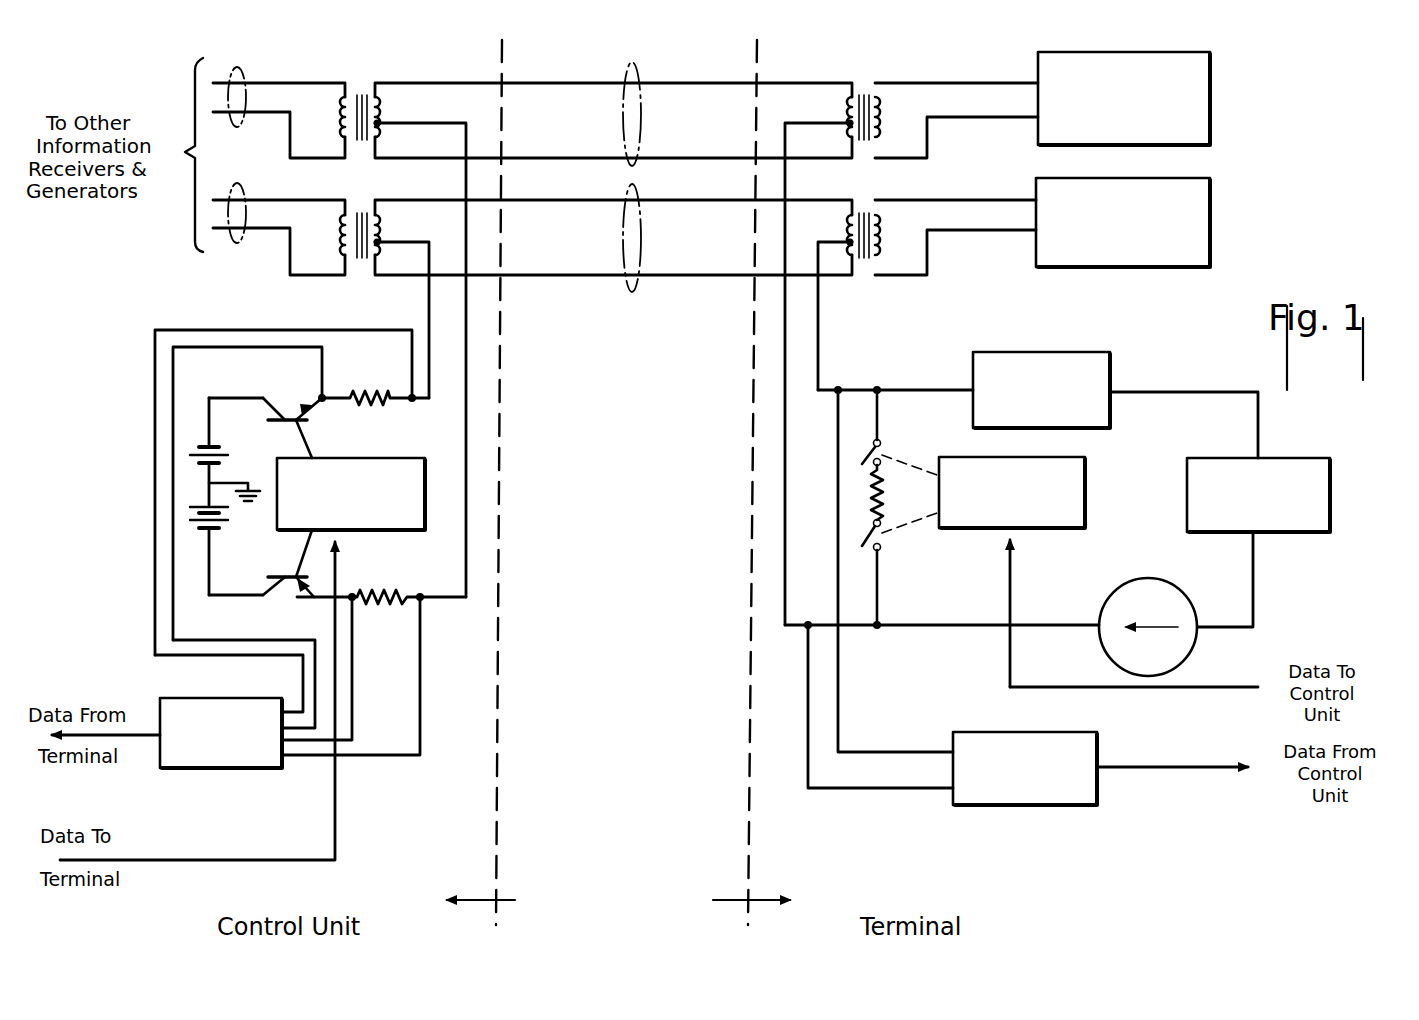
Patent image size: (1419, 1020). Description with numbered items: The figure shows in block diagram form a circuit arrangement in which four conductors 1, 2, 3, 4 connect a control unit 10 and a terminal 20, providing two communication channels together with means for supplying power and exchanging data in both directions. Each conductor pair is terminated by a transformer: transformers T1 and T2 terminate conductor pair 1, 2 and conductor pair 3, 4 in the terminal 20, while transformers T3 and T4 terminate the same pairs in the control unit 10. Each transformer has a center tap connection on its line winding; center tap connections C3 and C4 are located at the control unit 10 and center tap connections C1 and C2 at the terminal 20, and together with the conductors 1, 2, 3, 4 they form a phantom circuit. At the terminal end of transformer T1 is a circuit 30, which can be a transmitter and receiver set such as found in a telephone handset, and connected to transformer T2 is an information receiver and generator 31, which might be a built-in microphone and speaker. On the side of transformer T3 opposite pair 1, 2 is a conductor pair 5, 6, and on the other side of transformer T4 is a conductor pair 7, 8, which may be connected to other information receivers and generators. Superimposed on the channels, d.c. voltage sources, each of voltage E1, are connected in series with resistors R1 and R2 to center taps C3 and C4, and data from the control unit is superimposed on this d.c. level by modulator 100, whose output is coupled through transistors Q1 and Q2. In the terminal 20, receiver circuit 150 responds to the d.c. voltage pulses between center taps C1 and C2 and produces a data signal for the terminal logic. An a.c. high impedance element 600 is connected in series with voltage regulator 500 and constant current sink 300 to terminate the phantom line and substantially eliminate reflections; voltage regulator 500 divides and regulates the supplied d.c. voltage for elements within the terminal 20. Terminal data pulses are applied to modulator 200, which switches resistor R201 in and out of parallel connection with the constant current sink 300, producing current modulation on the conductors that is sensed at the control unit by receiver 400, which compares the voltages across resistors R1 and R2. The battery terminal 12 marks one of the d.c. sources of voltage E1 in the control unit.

The conductor 1 is at (585, 80).
The conductor 2 is at (594, 155).
The conductor 3 is at (598, 198).
The conductor 4 is at (600, 273).
The conductor 5 is at (240, 72).
The conductor 6 is at (279, 112).
The conductor 7 is at (262, 176).
The conductor 8 is at (279, 229).
The control unit 10 is at (202, 438).
The d.c. voltage source 12 is at (215, 531).
The terminal 20 is at (751, 919).
The circuit 30 is at (1202, 52).
The information receiver and generator 31 is at (1226, 176).
The modulator 100 is at (407, 531).
The receiver circuit 150 is at (1068, 806).
The modulator 200 is at (1088, 462).
The constant current sink 300 is at (1162, 563).
The receiver 400 is at (222, 769).
The voltage regulator 500 is at (1332, 462).
The a.c. high impedance element 600 is at (1103, 371).
The transformer T1 is at (864, 94).
The transformer T2 is at (864, 213).
The transformer T3 is at (360, 94).
The transformer T4 is at (360, 213).
The center tap connection C1 is at (819, 373).
The center tap connection C2 is at (832, 301).
The center tap connection C3 is at (380, 123).
The center tap connection C4 is at (380, 242).
The transistor Q1 is at (292, 416).
The transistor Q2 is at (295, 563).
The resistor R1 is at (373, 386).
The resistor R2 is at (381, 584).
The resistor R201 is at (882, 476).
The voltage E1 is at (225, 496).